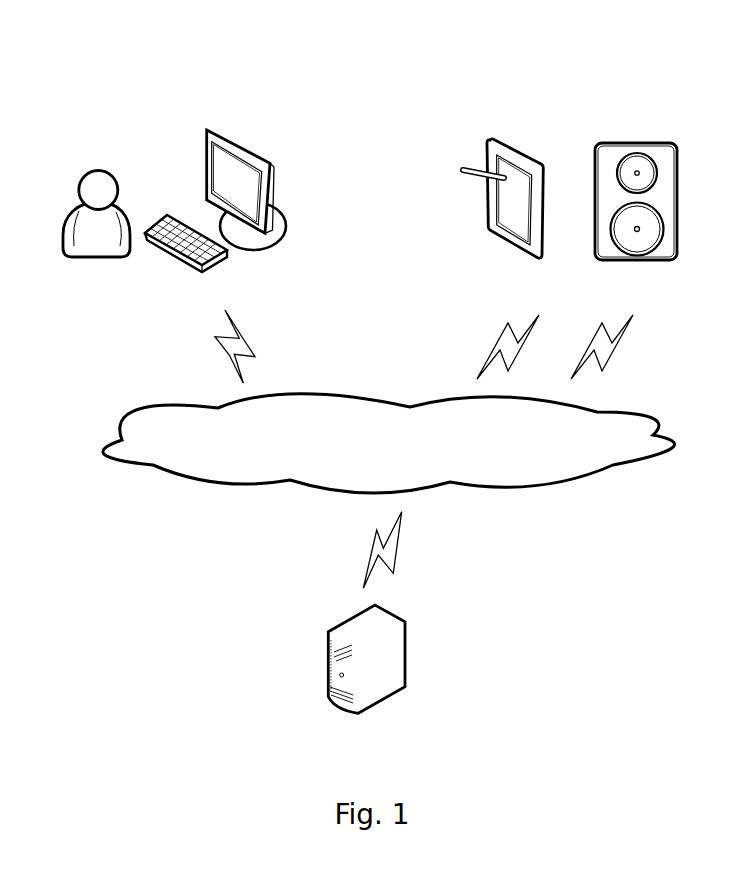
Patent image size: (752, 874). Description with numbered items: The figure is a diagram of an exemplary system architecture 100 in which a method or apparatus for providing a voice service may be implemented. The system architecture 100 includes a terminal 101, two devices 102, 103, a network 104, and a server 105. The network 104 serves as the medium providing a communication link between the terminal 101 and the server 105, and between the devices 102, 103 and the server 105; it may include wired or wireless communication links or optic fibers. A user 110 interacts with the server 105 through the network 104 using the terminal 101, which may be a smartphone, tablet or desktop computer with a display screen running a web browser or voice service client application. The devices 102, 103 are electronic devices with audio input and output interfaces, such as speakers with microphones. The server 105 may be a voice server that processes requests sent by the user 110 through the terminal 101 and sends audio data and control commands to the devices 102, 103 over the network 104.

The system architecture 100 is at (564, 44).
The terminal 101 is at (215, 213).
The device 102 is at (504, 217).
The device 103 is at (636, 219).
The network 104 is at (389, 443).
The server 105 is at (366, 683).
The user 110 is at (96, 234).